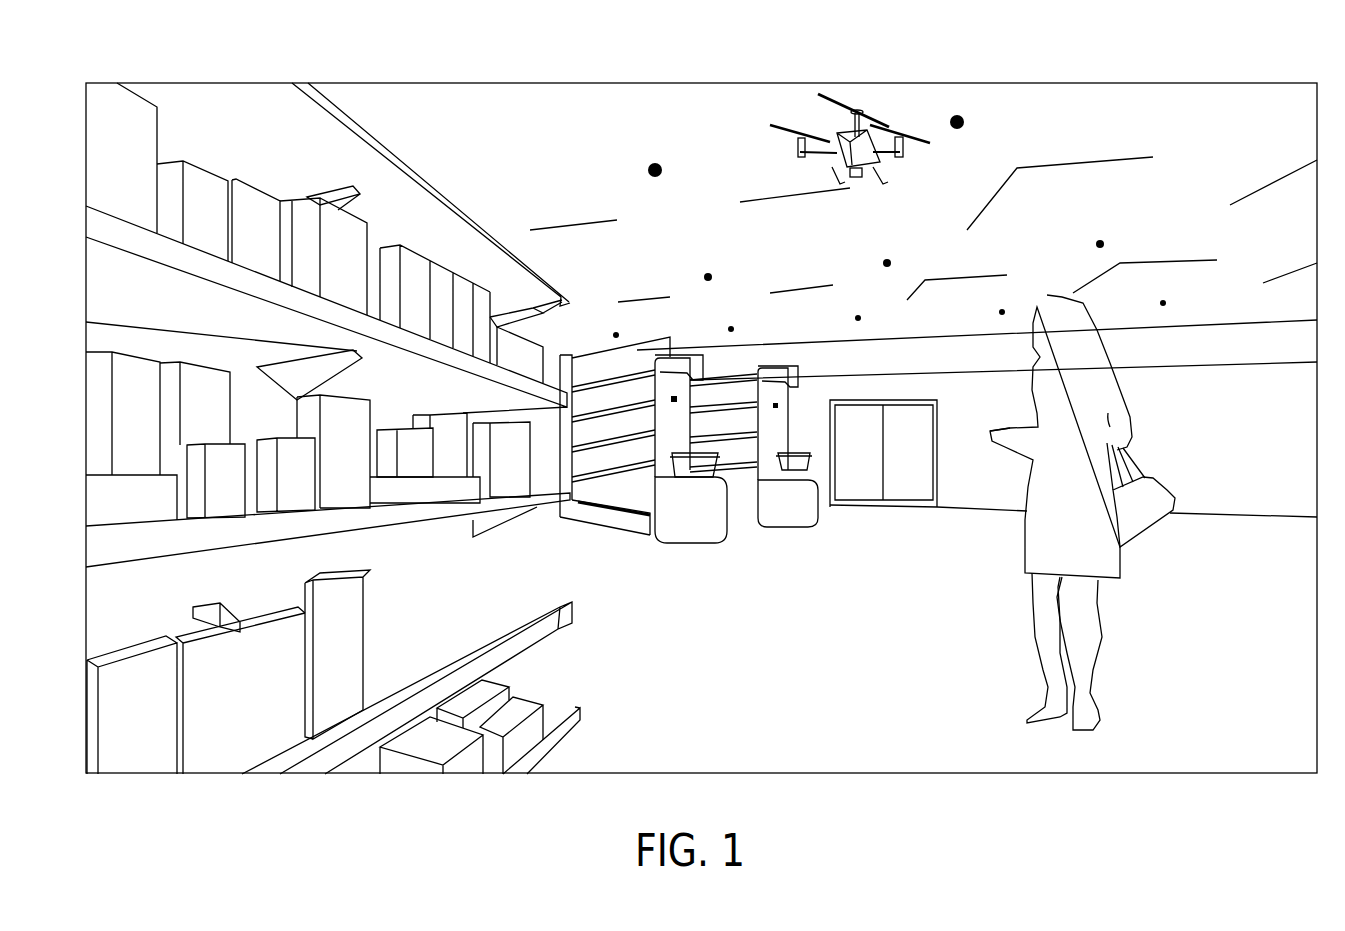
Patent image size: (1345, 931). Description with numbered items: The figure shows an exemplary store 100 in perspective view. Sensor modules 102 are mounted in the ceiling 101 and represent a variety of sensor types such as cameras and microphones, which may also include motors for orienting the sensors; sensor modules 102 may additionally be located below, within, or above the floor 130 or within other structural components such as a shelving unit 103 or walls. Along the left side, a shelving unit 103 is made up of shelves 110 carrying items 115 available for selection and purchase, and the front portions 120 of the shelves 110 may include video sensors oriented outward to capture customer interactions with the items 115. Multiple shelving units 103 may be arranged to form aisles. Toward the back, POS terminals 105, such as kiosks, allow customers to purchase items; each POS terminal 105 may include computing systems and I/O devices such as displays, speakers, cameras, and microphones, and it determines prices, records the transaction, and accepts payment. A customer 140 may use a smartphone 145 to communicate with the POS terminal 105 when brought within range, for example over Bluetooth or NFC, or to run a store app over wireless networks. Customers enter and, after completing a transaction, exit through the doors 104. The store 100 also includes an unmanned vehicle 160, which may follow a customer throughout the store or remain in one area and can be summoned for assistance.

The store 100 is at (1219, 44).
The ceiling 101 is at (1217, 140).
The sensor modules 102 is at (660, 165).
The shelving unit 103 is at (413, 135).
The doors 104 is at (853, 493).
The POS terminal 105 is at (688, 347).
The shelves 110 is at (452, 208).
The items 115 is at (348, 488).
The front portions of shelves 120 is at (547, 387).
The floor 130 is at (1157, 728).
The customer 140 is at (1138, 408).
The smartphone 145 is at (988, 430).
The unmanned vehicle 160 is at (860, 183).